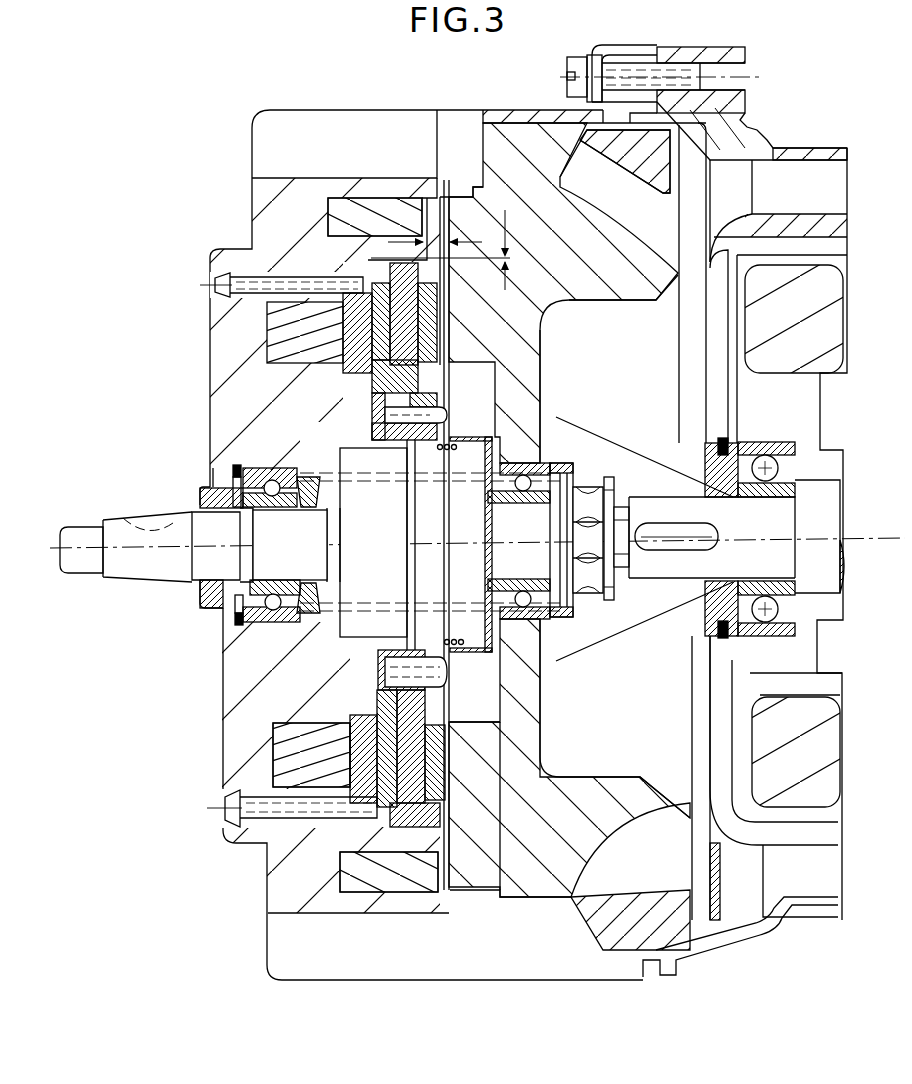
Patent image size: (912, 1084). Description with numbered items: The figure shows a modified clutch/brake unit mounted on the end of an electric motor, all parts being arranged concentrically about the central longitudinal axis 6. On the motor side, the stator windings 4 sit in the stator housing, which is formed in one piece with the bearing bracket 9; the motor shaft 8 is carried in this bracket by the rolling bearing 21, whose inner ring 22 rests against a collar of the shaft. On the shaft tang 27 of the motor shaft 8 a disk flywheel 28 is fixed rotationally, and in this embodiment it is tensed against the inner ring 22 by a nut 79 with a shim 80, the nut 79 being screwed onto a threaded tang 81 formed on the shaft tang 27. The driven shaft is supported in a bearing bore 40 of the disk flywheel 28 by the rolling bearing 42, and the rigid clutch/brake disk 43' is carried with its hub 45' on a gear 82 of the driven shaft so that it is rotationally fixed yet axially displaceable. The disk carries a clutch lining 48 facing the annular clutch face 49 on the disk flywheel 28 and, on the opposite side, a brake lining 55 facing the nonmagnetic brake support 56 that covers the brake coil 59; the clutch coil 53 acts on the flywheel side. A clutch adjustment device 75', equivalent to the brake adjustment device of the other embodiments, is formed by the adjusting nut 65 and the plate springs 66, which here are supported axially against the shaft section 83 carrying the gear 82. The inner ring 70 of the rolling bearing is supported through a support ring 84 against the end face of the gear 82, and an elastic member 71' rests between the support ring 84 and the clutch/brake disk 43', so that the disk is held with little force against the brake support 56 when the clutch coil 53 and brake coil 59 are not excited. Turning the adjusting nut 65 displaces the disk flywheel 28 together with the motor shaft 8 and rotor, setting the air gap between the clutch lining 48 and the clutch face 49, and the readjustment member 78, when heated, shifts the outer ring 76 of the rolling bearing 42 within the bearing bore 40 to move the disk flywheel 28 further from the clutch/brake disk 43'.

The stator windings 4 is at (793, 328).
The central longitudinal axis 6 is at (115, 547).
The motor shaft 8 is at (813, 532).
The bearing bracket 9 is at (716, 307).
The rolling bearing 21 is at (772, 432).
The inner ring 22 is at (775, 497).
The shaft tang 27 is at (737, 600).
The disk flywheel 28 is at (533, 212).
The bearing bore 40 is at (541, 623).
The rolling bearing 42 is at (519, 450).
The clutch/brake disk 43' is at (429, 525).
The hub 45' is at (347, 548).
The clutch lining 48 is at (437, 297).
The clutch face 49 is at (443, 335).
The clutch coil 53 is at (377, 215).
The brake lining 55 is at (350, 325).
The brake support 56 is at (353, 347).
The brake coil 59 is at (303, 758).
The adjusting nut 65 is at (217, 590).
The plate springs 66 is at (307, 623).
The inner ring 70 is at (573, 472).
The elastic member 71' is at (436, 541).
The clutch adjustment device 75' is at (290, 545).
The outer ring 76 is at (545, 478).
The readjustment member 78 is at (558, 475).
The nut 79 is at (584, 528).
The shim 80 is at (609, 580).
The threaded tang 81 is at (616, 555).
The gear 82 is at (333, 470).
The shaft section 83 is at (310, 627).
The support ring 84 is at (490, 652).